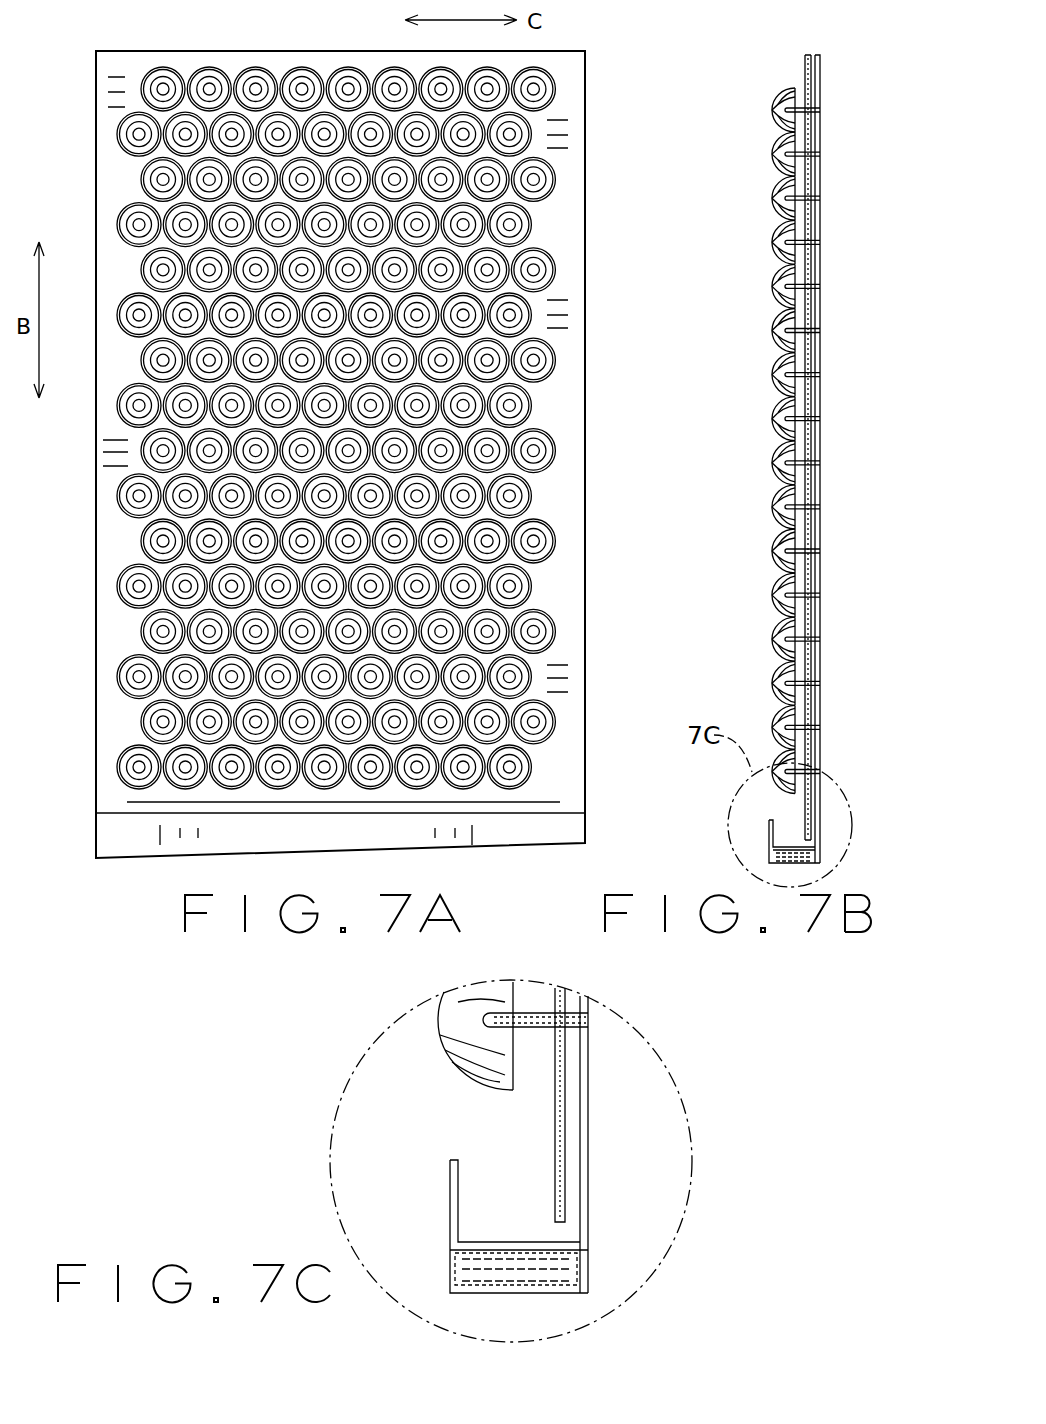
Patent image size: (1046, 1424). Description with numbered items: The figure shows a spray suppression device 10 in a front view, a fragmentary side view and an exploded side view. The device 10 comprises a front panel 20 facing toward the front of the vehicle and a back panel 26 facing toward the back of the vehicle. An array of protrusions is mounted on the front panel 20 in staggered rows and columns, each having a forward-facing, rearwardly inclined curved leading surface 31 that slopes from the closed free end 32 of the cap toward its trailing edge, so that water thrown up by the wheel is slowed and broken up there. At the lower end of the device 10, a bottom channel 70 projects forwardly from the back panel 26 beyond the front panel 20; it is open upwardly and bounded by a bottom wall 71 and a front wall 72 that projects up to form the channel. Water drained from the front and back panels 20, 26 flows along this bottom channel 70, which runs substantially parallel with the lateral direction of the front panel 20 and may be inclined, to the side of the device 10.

In FIG. 7A, the spray suppression device 10 is at (590, 33).
In FIG. 7A, the front panel 20 is at (570, 65).
In FIG. 7B, the front panel 20 is at (808, 765).
In FIG. 7C, the front panel 20 is at (555, 1115).
In FIG. 7B, the back panel 26 is at (814, 818).
In FIG. 7C, the back panel 26 is at (590, 1142).
In FIG. 7A, the curved leading surface 31 is at (256, 65).
In FIG. 7A, the free end 32 is at (210, 85).
In FIG. 7B, the bottom channel 70 is at (790, 818).
In FIG. 7C, the bottom channel 70 is at (492, 1180).
In FIG. 7B, the bottom wall 71 is at (800, 858).
In FIG. 7C, the bottom wall 71 is at (533, 1280).
In FIG. 7A, the front wall 72 is at (133, 842).
In FIG. 7B, the front wall 72 is at (770, 830).
In FIG. 7C, the front wall 72 is at (450, 1192).